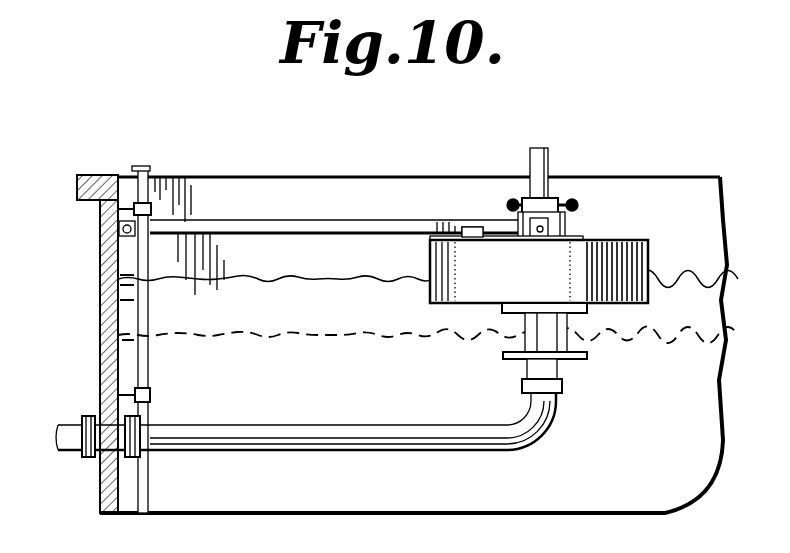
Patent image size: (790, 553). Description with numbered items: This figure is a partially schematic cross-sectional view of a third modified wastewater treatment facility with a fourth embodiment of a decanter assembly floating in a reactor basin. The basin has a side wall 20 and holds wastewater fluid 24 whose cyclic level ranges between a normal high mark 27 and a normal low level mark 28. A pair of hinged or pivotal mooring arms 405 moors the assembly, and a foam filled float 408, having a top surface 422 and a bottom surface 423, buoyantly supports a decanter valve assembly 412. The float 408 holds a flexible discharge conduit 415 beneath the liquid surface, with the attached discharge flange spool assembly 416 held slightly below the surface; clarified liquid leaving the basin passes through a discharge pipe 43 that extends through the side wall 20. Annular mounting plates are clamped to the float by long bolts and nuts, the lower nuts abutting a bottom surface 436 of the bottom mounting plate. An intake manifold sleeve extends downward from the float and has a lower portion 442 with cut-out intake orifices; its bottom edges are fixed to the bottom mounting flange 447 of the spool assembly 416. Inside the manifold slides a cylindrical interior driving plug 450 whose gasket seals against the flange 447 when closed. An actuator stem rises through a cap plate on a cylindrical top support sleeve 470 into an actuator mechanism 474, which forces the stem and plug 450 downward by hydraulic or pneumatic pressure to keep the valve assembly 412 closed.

The side wall 20 is at (100, 333).
The wastewater fluid 24 is at (402, 384).
The normal high mark 27 is at (356, 278).
The normal low level mark 28 is at (215, 334).
The discharge pipe 43 is at (73, 462).
The mooring arms 405 is at (313, 224).
The float 408 is at (647, 247).
The decanter valve assembly 412 is at (518, 172).
The flexible discharge conduit 415 is at (400, 451).
The discharge flange spool assembly 416 is at (522, 375).
The top surface 422 is at (447, 236).
The bottom surface 423 is at (433, 305).
The bottom surface 436 is at (566, 256).
The lower portion 442 is at (568, 332).
The bottom mounting flange 447 is at (588, 357).
The interior driving plug 450 is at (520, 328).
The top support sleeve 470 is at (572, 222).
The actuator mechanism 474 is at (548, 160).